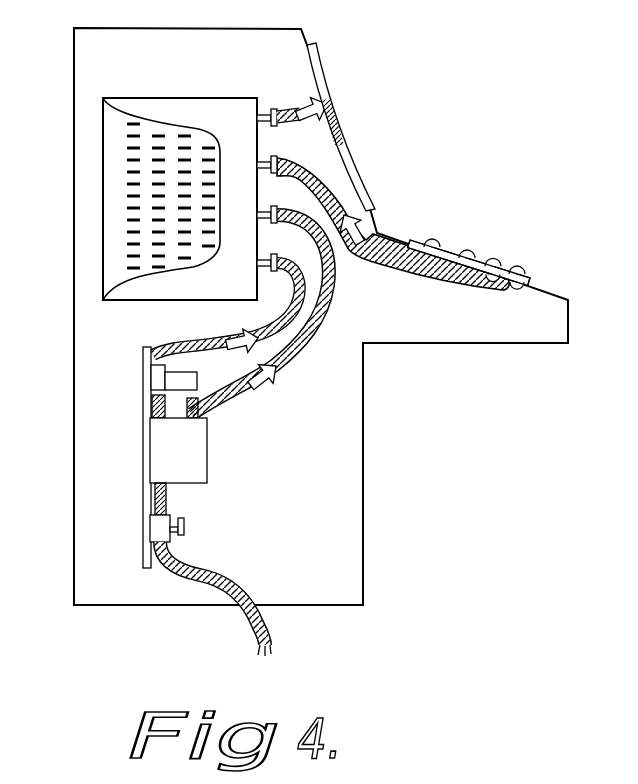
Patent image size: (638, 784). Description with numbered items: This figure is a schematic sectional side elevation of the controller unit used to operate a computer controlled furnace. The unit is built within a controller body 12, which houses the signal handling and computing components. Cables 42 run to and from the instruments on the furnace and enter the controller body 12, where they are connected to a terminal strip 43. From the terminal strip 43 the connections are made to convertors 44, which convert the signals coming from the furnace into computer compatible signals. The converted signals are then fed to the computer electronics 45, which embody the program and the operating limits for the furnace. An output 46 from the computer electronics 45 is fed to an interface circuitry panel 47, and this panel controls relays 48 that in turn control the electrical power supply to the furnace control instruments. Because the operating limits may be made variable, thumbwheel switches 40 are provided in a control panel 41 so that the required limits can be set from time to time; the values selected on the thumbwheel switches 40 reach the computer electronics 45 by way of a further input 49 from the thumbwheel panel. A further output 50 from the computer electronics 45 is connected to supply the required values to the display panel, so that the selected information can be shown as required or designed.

The controller body 12 is at (72, 528).
The thumbwheel switches 40 is at (415, 240).
The control panel 41 is at (483, 252).
The cables 42 is at (252, 632).
The terminal strip 43 is at (155, 532).
The convertors 44 is at (163, 447).
The computer electronics 45 is at (132, 182).
The output 46 is at (175, 347).
The interface circuitry panel 47 is at (157, 378).
The relays 48 is at (157, 407).
The input 49 is at (296, 163).
The output 50 is at (303, 112).